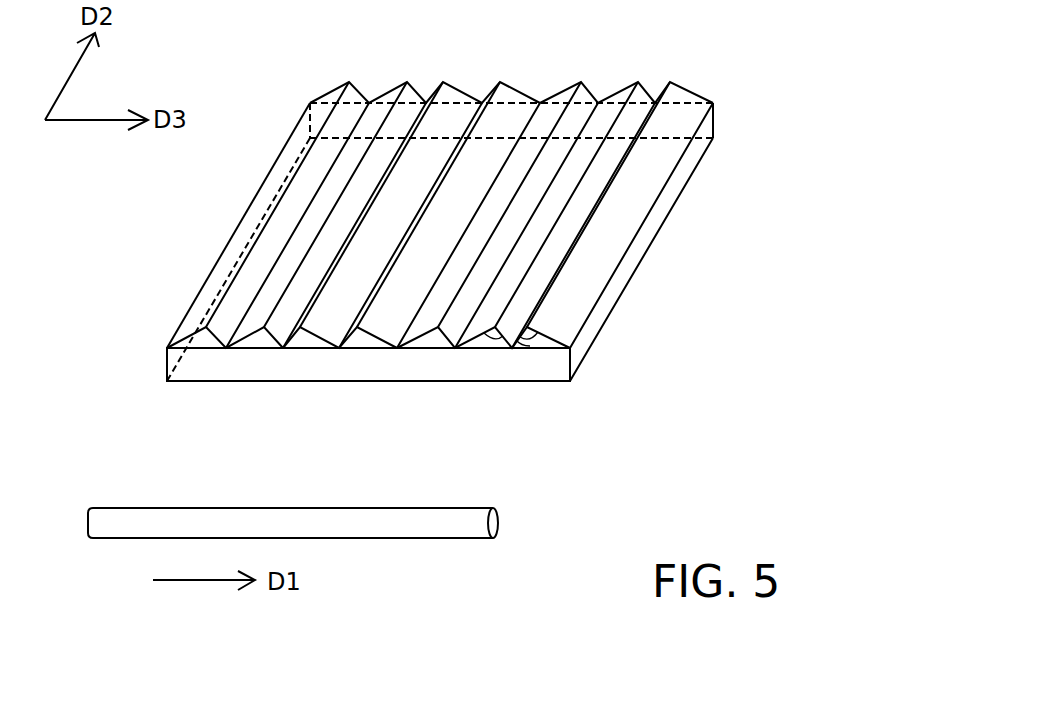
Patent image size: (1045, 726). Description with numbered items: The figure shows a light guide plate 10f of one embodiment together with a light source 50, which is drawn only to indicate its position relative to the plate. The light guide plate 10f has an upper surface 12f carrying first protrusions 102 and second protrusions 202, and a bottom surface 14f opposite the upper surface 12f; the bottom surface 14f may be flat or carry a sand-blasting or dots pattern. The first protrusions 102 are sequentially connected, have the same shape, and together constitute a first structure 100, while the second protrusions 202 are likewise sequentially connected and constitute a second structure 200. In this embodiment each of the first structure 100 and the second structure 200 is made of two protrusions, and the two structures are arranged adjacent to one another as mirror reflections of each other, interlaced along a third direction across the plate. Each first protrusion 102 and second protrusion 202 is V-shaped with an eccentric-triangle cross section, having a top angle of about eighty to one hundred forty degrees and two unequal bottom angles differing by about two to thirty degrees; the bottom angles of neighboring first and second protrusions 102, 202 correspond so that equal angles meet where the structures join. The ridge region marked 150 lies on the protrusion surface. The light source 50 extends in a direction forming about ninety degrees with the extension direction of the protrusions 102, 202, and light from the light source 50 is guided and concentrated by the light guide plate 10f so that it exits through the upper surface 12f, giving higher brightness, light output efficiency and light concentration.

The light guide plate 10f is at (830, 57).
The upper surface 12f is at (671, 81).
The bottom surface 14f is at (643, 262).
The ridge line of prism 150 is at (430, 92).
The first structure 100 is at (258, 424).
The first protrusion 102 is at (195, 350).
The second structure 200 is at (367, 424).
The second protrusion 202 is at (302, 350).
The light source 50 is at (499, 522).